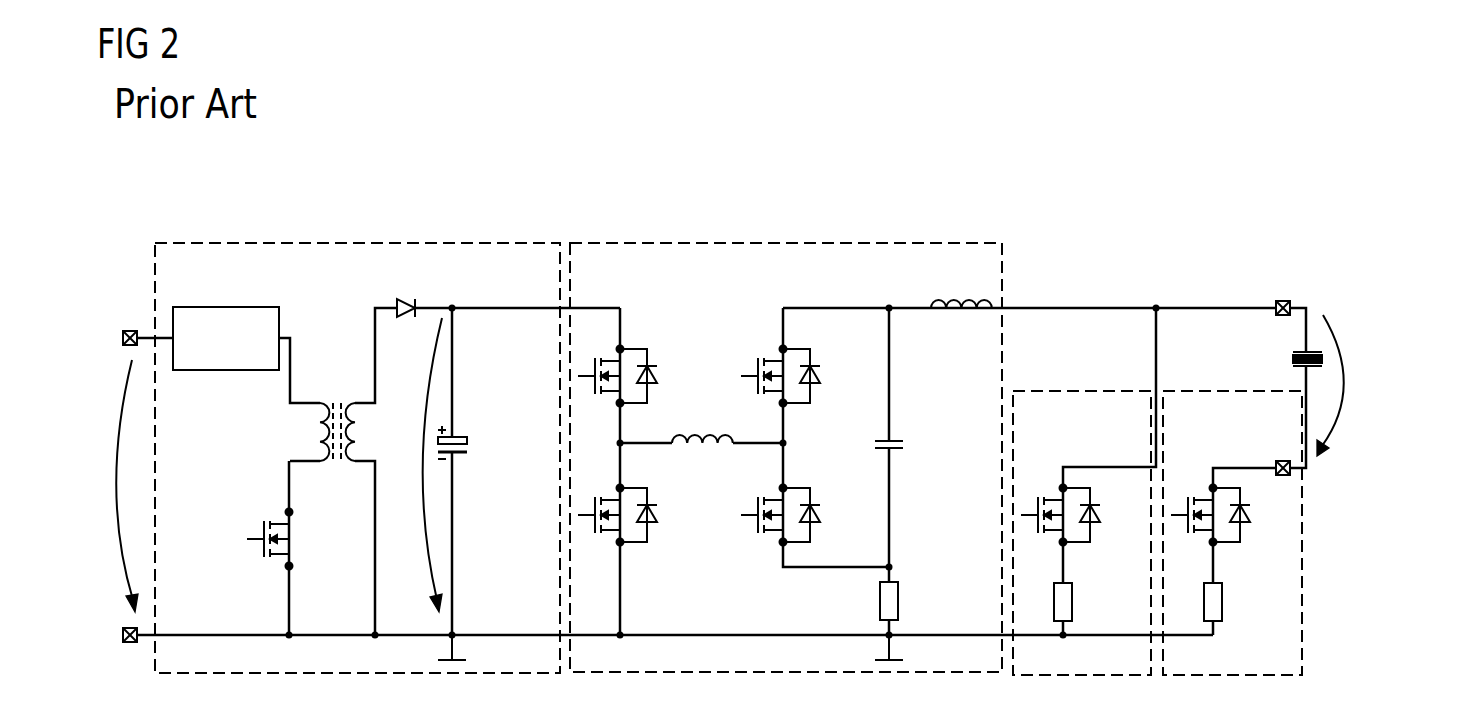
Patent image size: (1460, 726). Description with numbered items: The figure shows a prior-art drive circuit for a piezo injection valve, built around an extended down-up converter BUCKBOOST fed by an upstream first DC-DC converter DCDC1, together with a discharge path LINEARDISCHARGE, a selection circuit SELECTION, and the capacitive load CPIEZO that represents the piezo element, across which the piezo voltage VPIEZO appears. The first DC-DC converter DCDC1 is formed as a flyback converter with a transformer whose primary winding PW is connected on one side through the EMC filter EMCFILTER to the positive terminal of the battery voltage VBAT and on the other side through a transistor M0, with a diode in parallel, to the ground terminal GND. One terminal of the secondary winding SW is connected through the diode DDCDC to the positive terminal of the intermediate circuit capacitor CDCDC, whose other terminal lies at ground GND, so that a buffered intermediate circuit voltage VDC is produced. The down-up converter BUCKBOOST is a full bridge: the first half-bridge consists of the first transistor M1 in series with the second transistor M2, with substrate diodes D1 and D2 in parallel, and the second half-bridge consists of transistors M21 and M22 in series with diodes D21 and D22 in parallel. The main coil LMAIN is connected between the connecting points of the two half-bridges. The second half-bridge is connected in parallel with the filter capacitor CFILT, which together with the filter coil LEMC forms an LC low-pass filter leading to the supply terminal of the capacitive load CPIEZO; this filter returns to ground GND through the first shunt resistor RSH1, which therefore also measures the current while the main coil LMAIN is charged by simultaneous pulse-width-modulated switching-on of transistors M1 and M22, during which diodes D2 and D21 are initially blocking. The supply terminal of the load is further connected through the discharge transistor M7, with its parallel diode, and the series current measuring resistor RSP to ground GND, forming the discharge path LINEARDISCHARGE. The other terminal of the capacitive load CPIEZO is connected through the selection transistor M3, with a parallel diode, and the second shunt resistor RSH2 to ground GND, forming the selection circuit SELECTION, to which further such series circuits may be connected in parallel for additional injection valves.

The first DC-DC converter DCDC1 is at (357, 458).
The down-up converter BUCKBOOST is at (786, 457).
The discharge path LINEARDISCHARGE is at (1082, 533).
The selection circuit SELECTION is at (1232, 533).
The ground terminal GND is at (108, 658).
The battery voltage VBAT is at (102, 486).
The EMC filter EMCFILTER is at (226, 338).
The primary winding PW is at (295, 432).
The secondary winding SW is at (371, 432).
The transistor M0 is at (307, 539).
The diode DDCDC is at (361, 290).
The intermediate circuit capacitor CDCDC is at (490, 462).
The intermediate circuit voltage VDC is at (412, 465).
The first transistor M1 is at (601, 360).
The diode D1 is at (638, 358).
The second transistor M2 is at (601, 499).
The diode D2 is at (638, 497).
The transistor M21 is at (756, 360).
The diode D21 is at (807, 358).
The transistor M22 is at (756, 499).
The diode D22 is at (807, 497).
The main coil LMAIN is at (701, 419).
The filter coil LEMC is at (957, 329).
The filter capacitor CFILT is at (923, 468).
The first shunt resistor RSH1 is at (926, 604).
The discharge transistor M7 is at (1081, 510).
The current measuring resistor RSP is at (1093, 605).
The selection transistor M3 is at (1233, 510).
The second shunt resistor RSH2 is at (1245, 605).
The capacitive load CPIEZO is at (1262, 388).
The piezo voltage VPIEZO is at (1373, 385).